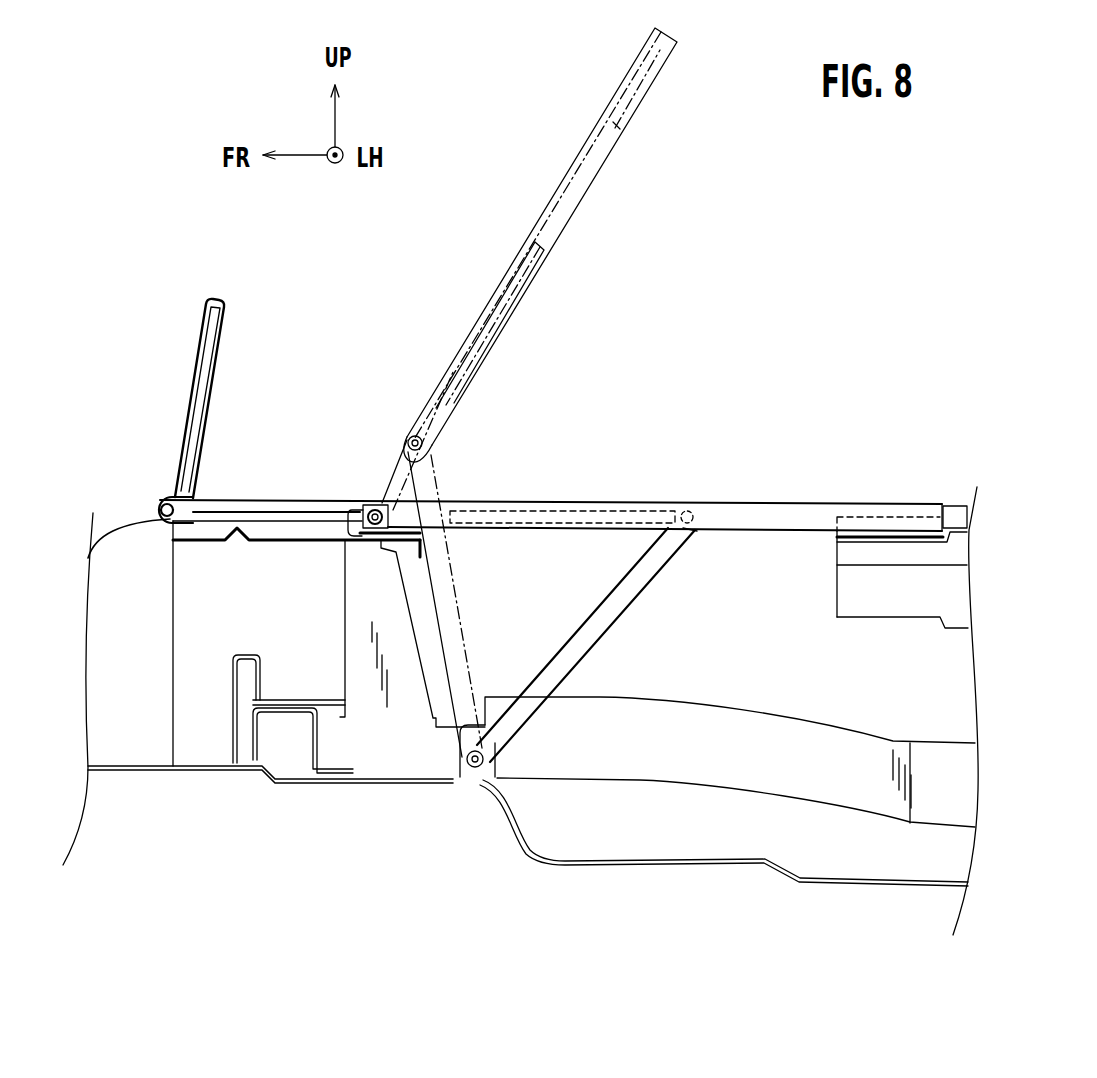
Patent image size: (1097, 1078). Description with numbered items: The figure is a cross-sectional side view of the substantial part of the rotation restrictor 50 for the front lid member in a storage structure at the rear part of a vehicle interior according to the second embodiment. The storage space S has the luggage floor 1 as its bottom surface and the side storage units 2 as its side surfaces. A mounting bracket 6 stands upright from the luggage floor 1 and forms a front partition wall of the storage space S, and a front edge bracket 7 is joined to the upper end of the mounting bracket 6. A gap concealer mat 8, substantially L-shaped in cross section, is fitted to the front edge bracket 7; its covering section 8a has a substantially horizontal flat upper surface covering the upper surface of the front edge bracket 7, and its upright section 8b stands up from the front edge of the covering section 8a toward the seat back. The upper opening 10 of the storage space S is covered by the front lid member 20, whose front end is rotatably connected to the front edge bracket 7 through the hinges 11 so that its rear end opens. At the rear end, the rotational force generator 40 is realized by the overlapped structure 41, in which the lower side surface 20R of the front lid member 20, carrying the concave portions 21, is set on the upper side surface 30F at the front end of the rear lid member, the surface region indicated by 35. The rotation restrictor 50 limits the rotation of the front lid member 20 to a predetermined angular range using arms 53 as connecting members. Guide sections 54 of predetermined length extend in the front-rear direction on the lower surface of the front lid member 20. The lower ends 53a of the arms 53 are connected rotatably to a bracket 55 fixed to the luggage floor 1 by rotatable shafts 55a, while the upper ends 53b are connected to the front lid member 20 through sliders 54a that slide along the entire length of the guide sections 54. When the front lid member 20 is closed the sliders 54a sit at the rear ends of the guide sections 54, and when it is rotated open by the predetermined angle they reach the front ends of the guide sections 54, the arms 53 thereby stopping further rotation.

The luggage floor 1 is at (598, 862).
The side storage unit 2 is at (947, 682).
The mounting bracket 6 is at (407, 637).
The front edge bracket 7 is at (208, 540).
The gap concealer mat 8 is at (260, 411).
The covering section 8a is at (282, 500).
The upright section 8b is at (201, 460).
The upper opening 10 is at (758, 540).
The hinge 11 is at (383, 507).
The front lid member 20 is at (558, 176).
The lower side surface 20R is at (891, 418).
The concave portion 21 is at (890, 528).
The upper side surface 30F is at (997, 417).
The front edge portion 35 is at (917, 517).
The rotational force generator 40 is at (848, 500).
The overlapped structure 41 is at (962, 392).
The rotation restrictor 50 is at (576, 682).
The arm 53 is at (557, 658).
The lower end 53a is at (498, 769).
The upper end 53b is at (712, 535).
The guide section 54 is at (468, 362).
The slider 54a is at (686, 512).
The bracket 55 is at (460, 767).
The rotatable shaft 55a is at (468, 770).
The storage space S is at (785, 672).